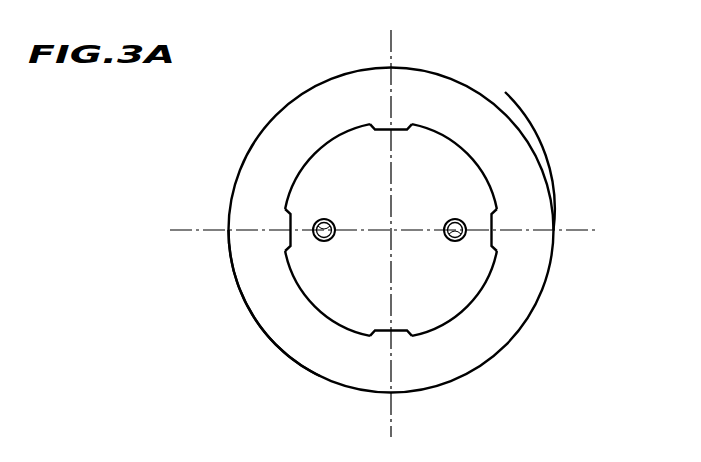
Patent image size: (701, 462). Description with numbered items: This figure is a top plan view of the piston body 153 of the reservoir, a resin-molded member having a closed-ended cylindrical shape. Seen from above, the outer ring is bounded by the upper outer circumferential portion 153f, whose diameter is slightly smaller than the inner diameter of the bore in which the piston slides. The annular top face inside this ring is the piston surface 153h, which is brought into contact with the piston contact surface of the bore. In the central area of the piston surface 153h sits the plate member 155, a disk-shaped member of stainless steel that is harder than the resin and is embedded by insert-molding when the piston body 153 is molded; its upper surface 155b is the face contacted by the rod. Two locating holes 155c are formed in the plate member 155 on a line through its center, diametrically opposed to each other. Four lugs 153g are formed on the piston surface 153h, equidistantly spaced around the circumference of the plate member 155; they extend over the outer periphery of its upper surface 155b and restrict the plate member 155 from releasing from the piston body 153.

The piston body 153 is at (497, 88).
The upper outer circumferential portion 153f is at (523, 135).
The lugs 153g is at (395, 125).
The piston surface 153h is at (302, 340).
The plate member 155 is at (490, 180).
The upper surface of plate member 155b is at (452, 290).
The locating holes 155c is at (313, 220).